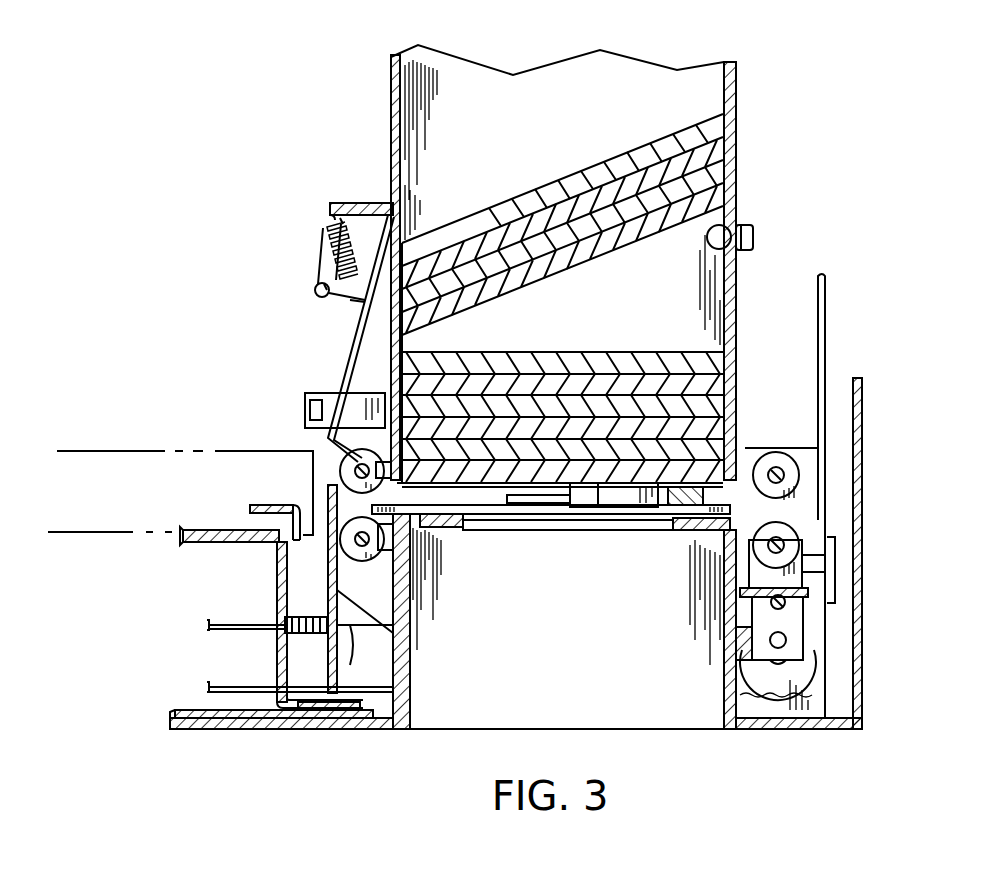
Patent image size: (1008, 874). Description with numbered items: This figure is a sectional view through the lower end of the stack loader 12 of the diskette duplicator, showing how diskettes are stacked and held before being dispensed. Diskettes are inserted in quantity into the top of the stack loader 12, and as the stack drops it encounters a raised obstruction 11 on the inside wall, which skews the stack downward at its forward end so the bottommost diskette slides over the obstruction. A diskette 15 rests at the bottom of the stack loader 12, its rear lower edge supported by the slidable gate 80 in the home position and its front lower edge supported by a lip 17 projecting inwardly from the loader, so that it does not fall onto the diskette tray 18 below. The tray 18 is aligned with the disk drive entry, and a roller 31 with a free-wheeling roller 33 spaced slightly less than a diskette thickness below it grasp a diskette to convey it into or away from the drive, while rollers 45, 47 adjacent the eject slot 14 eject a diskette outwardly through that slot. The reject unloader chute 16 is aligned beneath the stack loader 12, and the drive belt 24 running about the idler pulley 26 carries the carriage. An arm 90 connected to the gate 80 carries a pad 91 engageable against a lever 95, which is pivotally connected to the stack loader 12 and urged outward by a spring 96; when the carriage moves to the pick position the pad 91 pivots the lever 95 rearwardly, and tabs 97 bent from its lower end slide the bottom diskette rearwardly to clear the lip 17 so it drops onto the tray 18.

The raised obstruction 11 is at (737, 214).
The stack loader 12 is at (547, 334).
The eject slot 14 is at (859, 503).
The diskette 15 is at (599, 507).
The reject unloader chute 16 is at (539, 650).
The lip 17 is at (412, 488).
The diskette tray 18 is at (565, 530).
The drive belt 24 is at (238, 620).
The idler pulley 26 is at (785, 690).
The roller 31 is at (338, 474).
The free-wheeling roller 33 is at (358, 563).
The roller 45 is at (797, 450).
The roller 47 is at (800, 529).
The slidable gate 80 is at (703, 497).
The arm 90 is at (318, 385).
The pad 91 is at (305, 400).
The lever 95 is at (340, 358).
The spring 96 is at (332, 247).
The tabs 97 is at (344, 435).